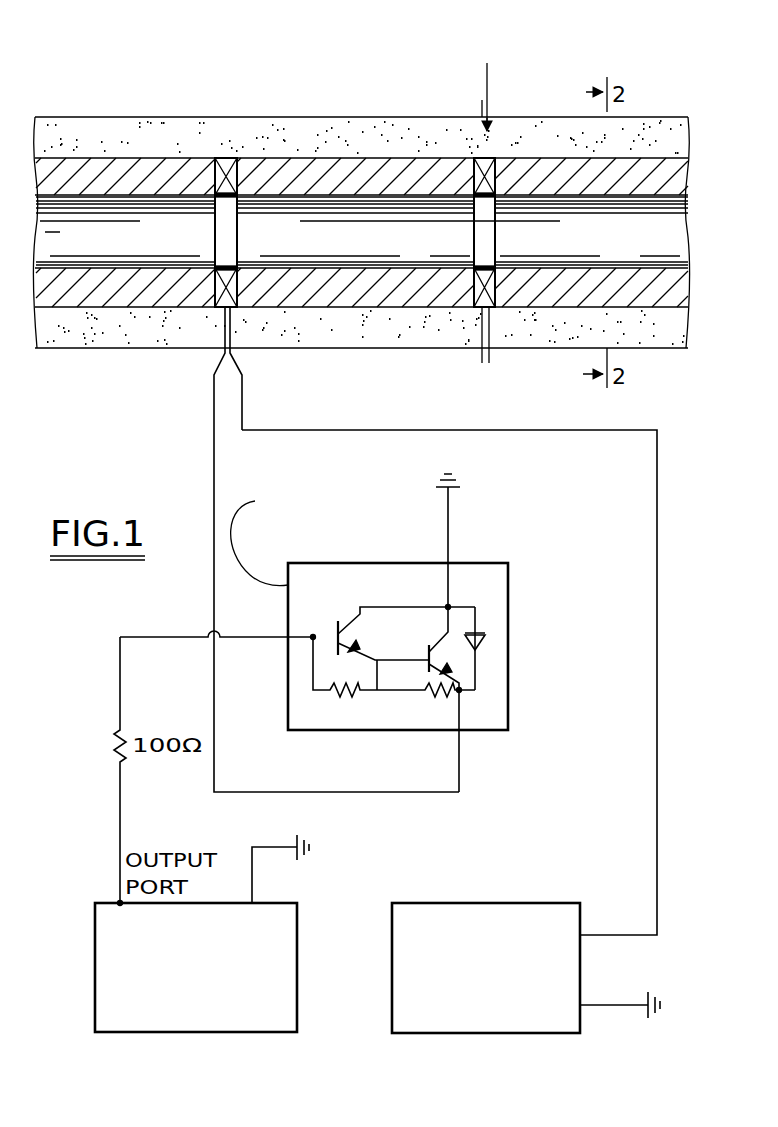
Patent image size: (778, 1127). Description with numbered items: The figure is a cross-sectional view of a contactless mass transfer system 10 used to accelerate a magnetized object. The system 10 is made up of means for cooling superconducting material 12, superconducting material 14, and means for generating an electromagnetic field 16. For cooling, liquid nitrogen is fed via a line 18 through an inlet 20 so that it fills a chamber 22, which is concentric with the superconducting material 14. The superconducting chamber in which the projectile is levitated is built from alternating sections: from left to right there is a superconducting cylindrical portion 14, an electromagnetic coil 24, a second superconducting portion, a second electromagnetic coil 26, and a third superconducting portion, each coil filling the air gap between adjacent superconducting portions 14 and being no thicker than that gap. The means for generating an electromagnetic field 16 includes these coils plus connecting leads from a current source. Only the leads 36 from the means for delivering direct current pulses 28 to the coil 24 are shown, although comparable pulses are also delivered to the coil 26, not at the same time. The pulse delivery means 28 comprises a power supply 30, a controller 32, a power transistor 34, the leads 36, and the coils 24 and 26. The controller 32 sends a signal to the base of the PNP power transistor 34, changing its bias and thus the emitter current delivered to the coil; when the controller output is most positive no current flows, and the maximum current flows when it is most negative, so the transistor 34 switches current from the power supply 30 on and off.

The contactless mass transfer system 10 is at (410, 43).
The means for cooling superconducting material 12 is at (218, 128).
The superconducting material 14 is at (162, 162).
The means for generating an electromagnetic field 16 is at (485, 158).
The line 18 is at (492, 77).
The inlet 20 is at (493, 110).
The chamber 22 is at (645, 125).
The electromagnetic coil 24 is at (225, 163).
The second electromagnetic coil 26 is at (487, 163).
The means for delivering direct current pulses 28 is at (678, 554).
The power supply 30 is at (580, 1020).
The controller 32 is at (297, 1018).
The power transistor 34 is at (508, 610).
The leads 36 is at (222, 355).